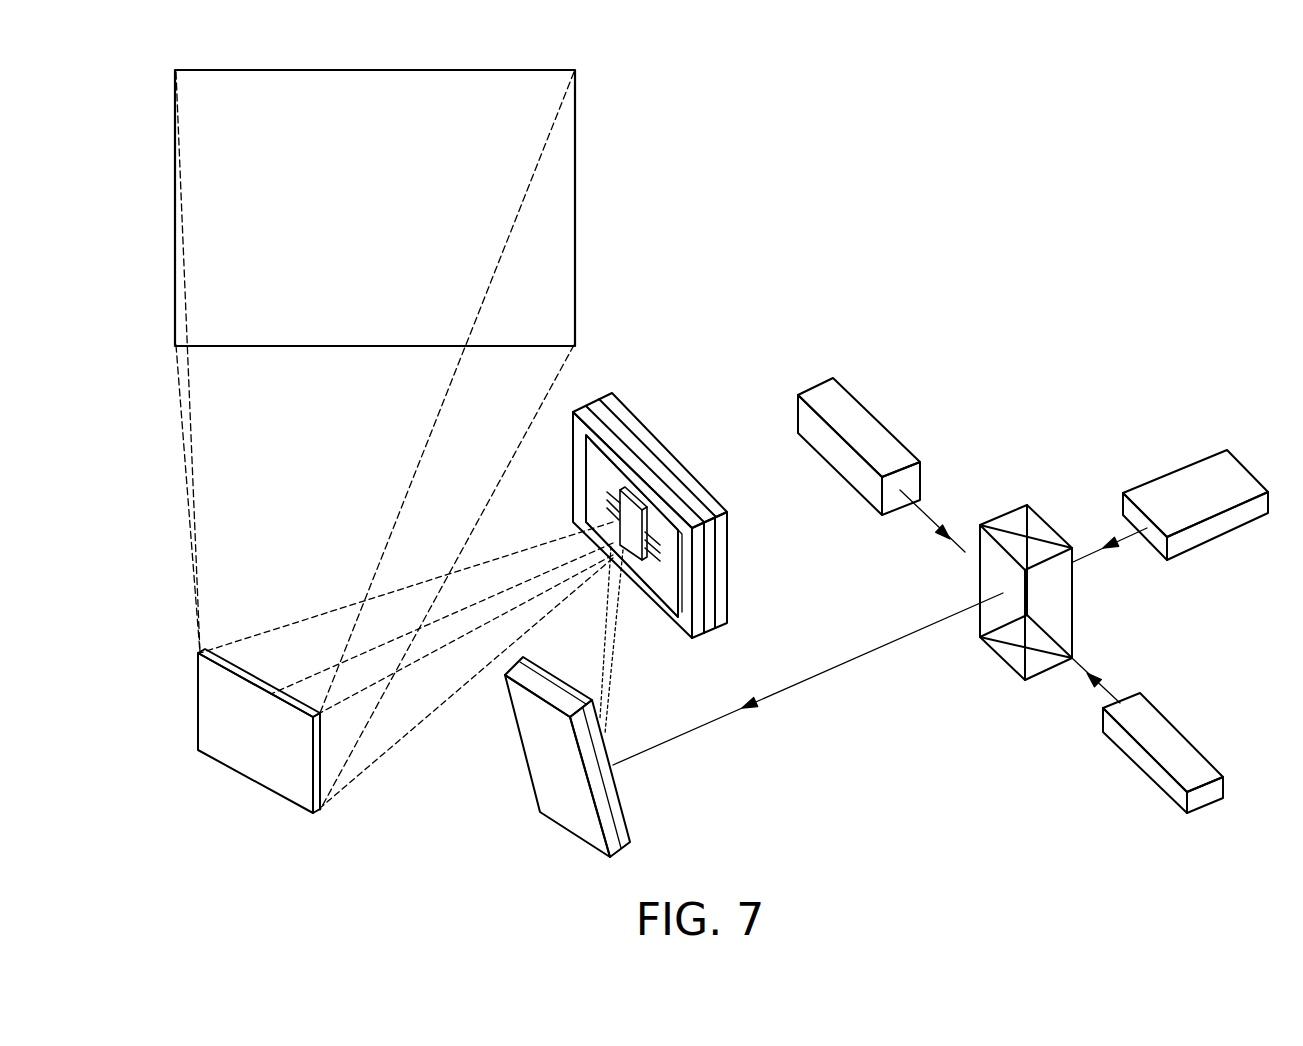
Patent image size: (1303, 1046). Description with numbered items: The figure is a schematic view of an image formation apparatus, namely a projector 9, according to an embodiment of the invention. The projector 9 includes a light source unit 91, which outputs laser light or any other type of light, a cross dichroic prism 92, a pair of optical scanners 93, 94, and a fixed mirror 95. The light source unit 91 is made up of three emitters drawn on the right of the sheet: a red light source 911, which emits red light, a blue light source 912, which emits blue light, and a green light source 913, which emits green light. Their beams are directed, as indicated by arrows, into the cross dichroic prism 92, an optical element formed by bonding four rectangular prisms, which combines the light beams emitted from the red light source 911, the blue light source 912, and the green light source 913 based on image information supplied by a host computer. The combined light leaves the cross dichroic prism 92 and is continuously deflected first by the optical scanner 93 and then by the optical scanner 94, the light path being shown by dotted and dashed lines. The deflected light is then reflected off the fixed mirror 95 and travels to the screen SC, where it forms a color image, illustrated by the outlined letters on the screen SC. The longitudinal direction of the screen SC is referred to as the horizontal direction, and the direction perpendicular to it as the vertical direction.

The projector 9 is at (898, 190).
The light source unit 91 is at (1260, 328).
The red light source 911 is at (1173, 745).
The blue light source 912 is at (840, 402).
The green light source 913 is at (1164, 488).
The cross dichroic prism 92 is at (1038, 527).
The optical scanner 93 is at (537, 757).
The optical scanner 94 is at (612, 428).
The fixed mirror 95 is at (208, 708).
The screen SC is at (575, 204).